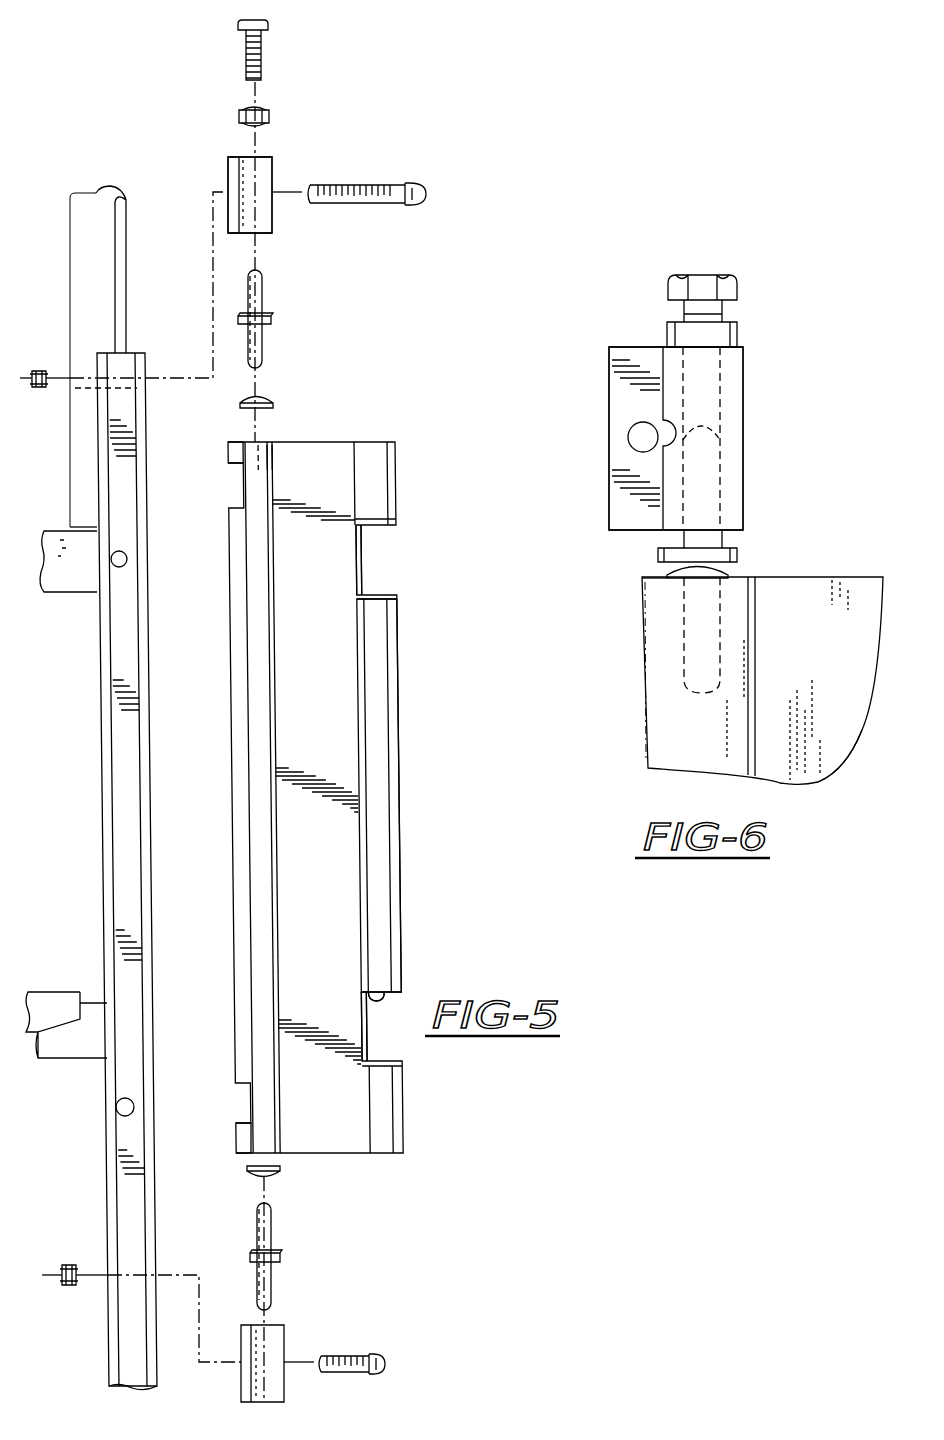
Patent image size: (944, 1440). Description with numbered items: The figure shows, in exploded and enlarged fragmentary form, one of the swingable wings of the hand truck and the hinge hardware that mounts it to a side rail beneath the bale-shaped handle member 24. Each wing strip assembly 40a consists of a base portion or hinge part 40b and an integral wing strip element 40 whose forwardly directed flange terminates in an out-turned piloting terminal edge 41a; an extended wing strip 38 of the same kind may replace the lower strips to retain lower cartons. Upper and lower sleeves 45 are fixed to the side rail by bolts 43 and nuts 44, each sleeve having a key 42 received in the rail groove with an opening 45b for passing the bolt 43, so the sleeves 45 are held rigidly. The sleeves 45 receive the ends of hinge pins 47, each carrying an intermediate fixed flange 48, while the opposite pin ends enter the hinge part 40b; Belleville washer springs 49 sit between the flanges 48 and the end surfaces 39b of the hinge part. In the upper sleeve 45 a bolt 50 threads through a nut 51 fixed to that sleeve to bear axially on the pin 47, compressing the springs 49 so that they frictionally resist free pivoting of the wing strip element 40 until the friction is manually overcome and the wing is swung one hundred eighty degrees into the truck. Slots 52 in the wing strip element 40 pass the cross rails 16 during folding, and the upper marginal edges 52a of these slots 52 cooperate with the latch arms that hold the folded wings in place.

In FIG. 5, the cross rail 16 is at (90, 592).
In FIG. 5, the bale-shaped handle member 24 is at (115, 256).
In FIG. 6, the extended wing strip 38 is at (752, 540).
In FIG. 5, the end surface of hinge part 39b is at (243, 444).
In FIG. 6, the end surface of hinge part 39b is at (655, 578).
In FIG. 5, the wing strip element 40 is at (334, 682).
In FIG. 6, the wing strip element 40 is at (814, 578).
In FIG. 6, the wing strip assembly 40a is at (822, 786).
In FIG. 5, the base portion or hinge part 40b is at (266, 462).
In FIG. 5, the out-turned piloting terminal edge 41a is at (373, 748).
In FIG. 5, the key 42 is at (228, 167).
In FIG. 6, the key 42 is at (618, 365).
In FIG. 5, the bolt 43 is at (362, 188).
In FIG. 5, the nut 44 is at (40, 370).
In FIG. 5, the sleeve 45 is at (272, 172).
In FIG. 6, the sleeve 45 is at (745, 430).
In FIG. 6, the opening 45b is at (630, 440).
In FIG. 5, the hinge pin 47 is at (288, 1226).
In FIG. 5, the intermediate fixed flange 48 is at (272, 320).
In FIG. 6, the intermediate fixed flange 48 is at (660, 555).
In FIG. 5, the Belleville washer spring 49 is at (273, 402).
In FIG. 6, the Belleville washer spring 49 is at (732, 575).
In FIG. 5, the bolt 50 is at (258, 68).
In FIG. 6, the bolt 50 is at (672, 290).
In FIG. 5, the nut 51 is at (270, 117).
In FIG. 6, the nut 51 is at (670, 333).
In FIG. 5, the slot 52 is at (370, 562).
In FIG. 5, the upper marginal edge of slot 52a is at (380, 996).